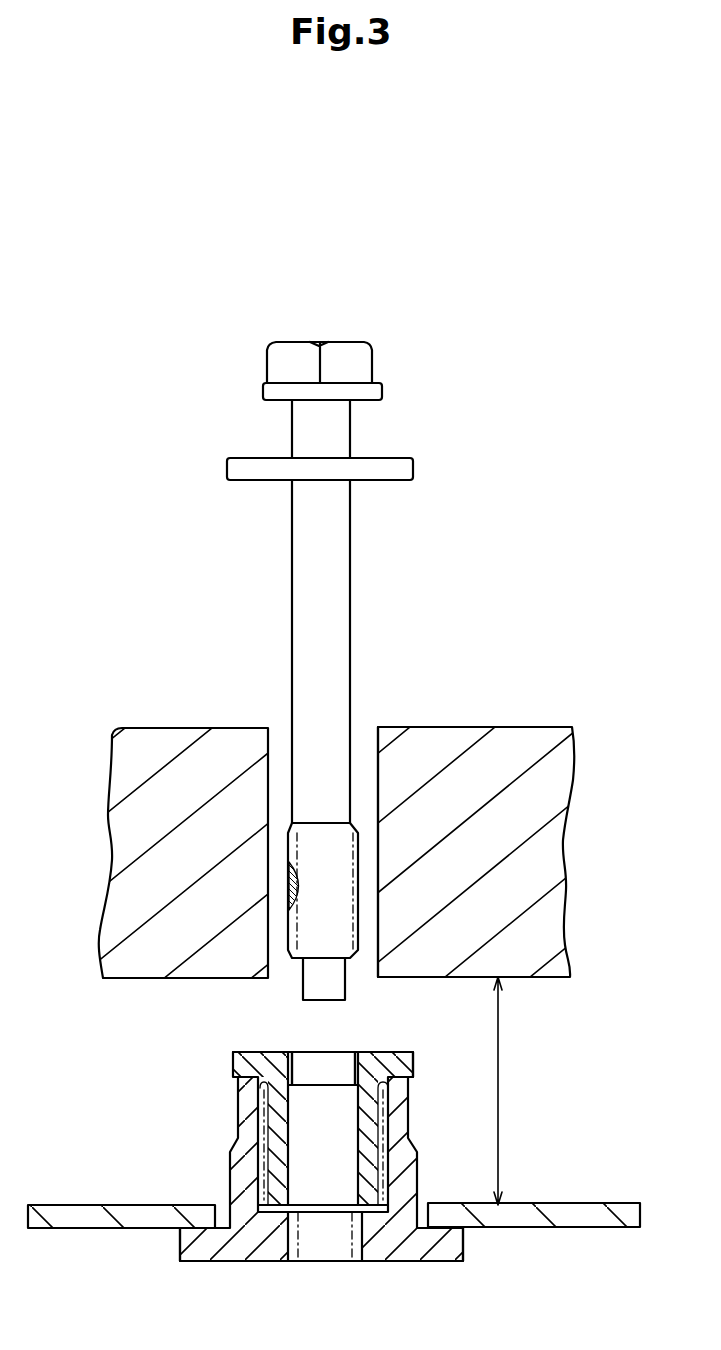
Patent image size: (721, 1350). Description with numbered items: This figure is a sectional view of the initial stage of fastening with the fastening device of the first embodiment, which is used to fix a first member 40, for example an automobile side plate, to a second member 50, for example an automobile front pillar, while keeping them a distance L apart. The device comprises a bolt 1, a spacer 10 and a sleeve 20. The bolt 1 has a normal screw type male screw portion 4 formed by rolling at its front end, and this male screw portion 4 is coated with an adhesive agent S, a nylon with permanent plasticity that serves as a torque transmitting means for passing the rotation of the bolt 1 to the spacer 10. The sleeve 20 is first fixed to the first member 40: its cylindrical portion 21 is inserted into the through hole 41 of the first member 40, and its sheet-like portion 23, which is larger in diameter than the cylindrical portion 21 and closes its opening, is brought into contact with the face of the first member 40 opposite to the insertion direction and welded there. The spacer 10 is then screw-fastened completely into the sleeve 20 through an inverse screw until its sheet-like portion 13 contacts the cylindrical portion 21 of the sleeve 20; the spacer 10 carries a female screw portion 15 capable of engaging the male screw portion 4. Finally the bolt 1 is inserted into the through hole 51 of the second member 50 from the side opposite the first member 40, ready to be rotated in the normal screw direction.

The bolt 1 is at (342, 543).
The male screw portion 4 is at (353, 877).
The adhesive agent S is at (288, 885).
The second member 50 is at (532, 742).
The through hole 51 is at (375, 752).
The distance between member and plate L is at (513, 1091).
The spacer 10 is at (331, 1156).
The sheet-like portion 13 is at (403, 1050).
The female screw portion 15 is at (294, 1068).
The cylindrical portion 21 is at (352, 1098).
The sleeve 20 is at (417, 1143).
The sheet-like portion 23 is at (438, 1247).
The first member 40 is at (560, 1210).
The through hole 41 is at (222, 1222).